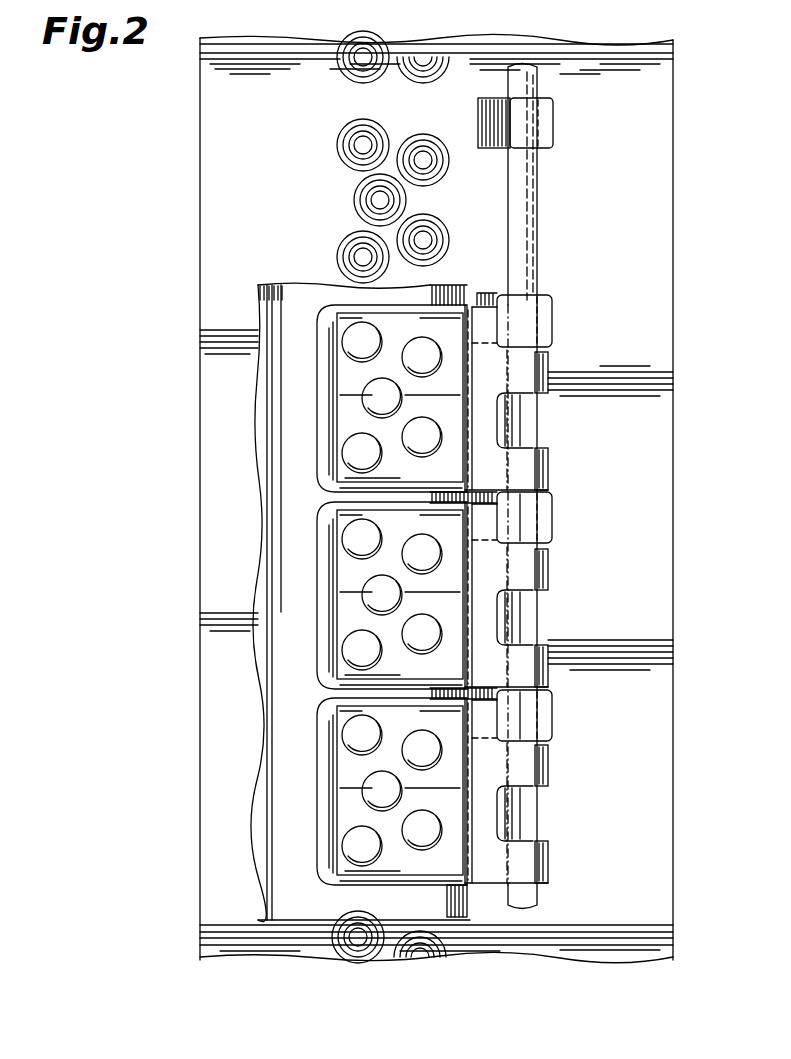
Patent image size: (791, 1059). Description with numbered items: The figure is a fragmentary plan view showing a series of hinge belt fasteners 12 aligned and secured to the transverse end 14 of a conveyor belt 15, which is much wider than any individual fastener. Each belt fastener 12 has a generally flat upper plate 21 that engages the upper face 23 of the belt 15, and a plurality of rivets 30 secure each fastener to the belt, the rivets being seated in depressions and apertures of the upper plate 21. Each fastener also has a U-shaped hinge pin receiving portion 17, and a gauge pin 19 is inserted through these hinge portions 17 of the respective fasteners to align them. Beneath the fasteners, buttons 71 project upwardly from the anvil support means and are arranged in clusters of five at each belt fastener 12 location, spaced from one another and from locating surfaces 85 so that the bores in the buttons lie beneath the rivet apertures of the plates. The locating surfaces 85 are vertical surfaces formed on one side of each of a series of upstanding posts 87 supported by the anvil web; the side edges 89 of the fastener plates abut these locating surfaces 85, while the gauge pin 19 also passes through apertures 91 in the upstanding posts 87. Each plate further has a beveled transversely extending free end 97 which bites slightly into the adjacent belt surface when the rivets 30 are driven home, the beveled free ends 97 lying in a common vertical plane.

The hinge belt fastener 12 is at (312, 453).
The end of the conveyor belt 14 is at (471, 917).
The conveyor belt 15 is at (308, 718).
The U-shaped hinge pin receiving portion 17 is at (548, 359).
The gauge pin 19 is at (531, 212).
The upper plate 21 is at (450, 405).
The upper face of the belt 23 is at (311, 437).
The rivet 30 is at (425, 346).
The button 71 is at (387, 128).
The locating surface 85 is at (549, 490).
The upstanding post 87 is at (554, 533).
The side edge 89 is at (410, 492).
The aperture in the upstanding block 91 is at (538, 296).
The beveled free end 97 is at (327, 388).